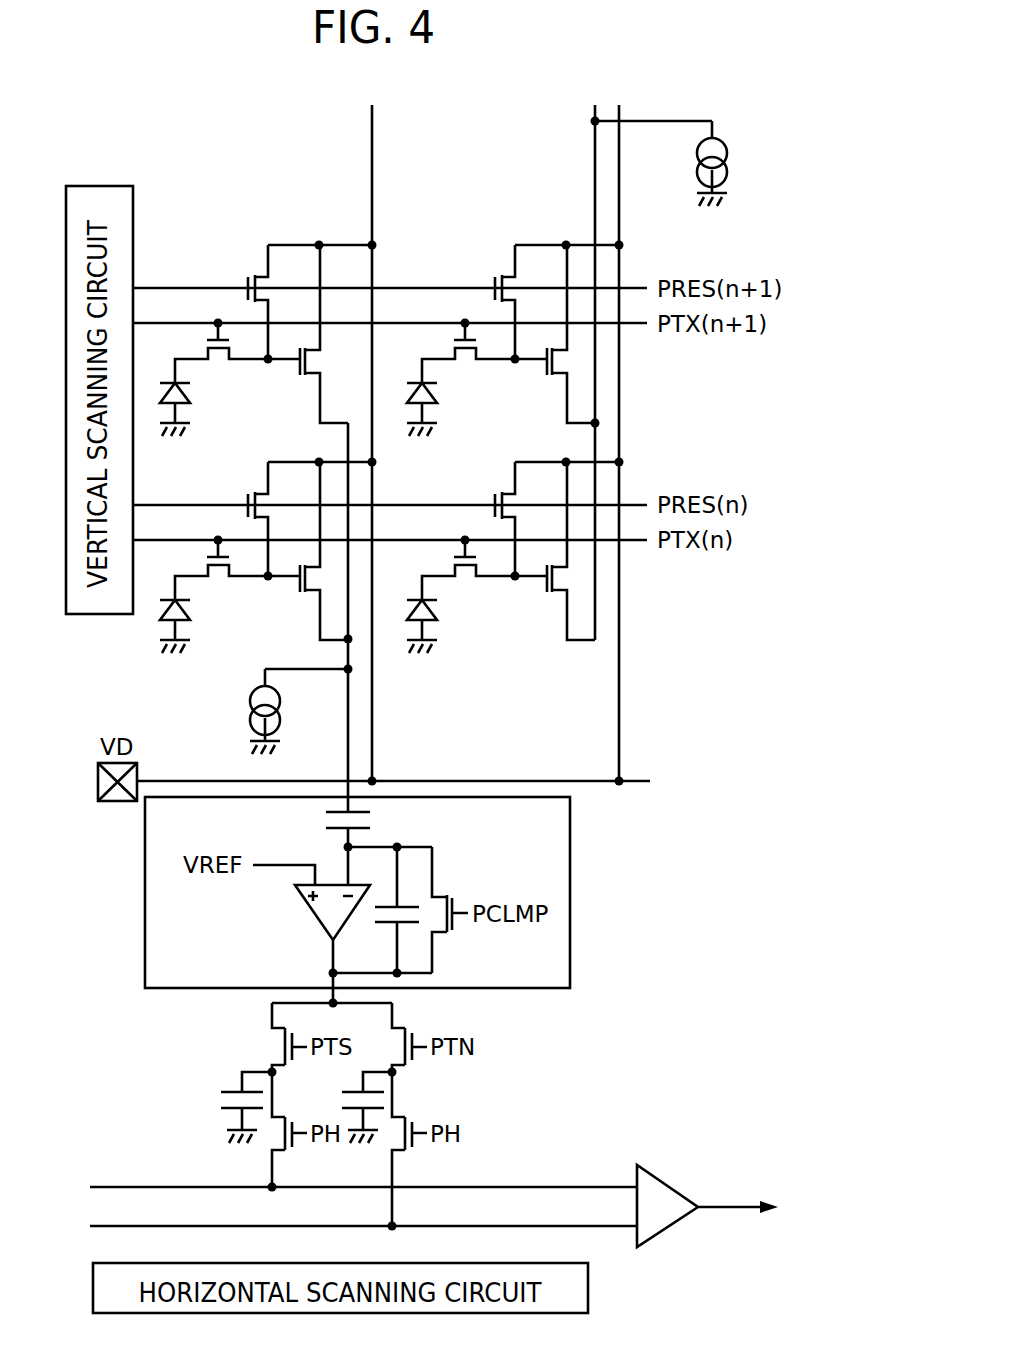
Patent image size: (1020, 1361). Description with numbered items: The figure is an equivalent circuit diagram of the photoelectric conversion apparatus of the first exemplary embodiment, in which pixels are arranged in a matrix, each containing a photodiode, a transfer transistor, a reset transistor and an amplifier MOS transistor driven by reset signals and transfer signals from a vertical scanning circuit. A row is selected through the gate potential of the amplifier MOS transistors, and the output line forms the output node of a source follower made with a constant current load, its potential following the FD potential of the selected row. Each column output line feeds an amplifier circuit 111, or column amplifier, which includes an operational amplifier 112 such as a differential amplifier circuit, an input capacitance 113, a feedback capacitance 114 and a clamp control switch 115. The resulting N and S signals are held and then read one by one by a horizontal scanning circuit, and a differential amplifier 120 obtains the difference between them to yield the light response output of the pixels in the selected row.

The amplifier circuit 111 is at (570, 838).
The operational amplifier 112 is at (313, 918).
The input capacitance 113 is at (372, 818).
The feedback capacitance 114 is at (418, 913).
The clamp control switch 115 is at (447, 933).
The differential amplifier 120 is at (673, 1183).